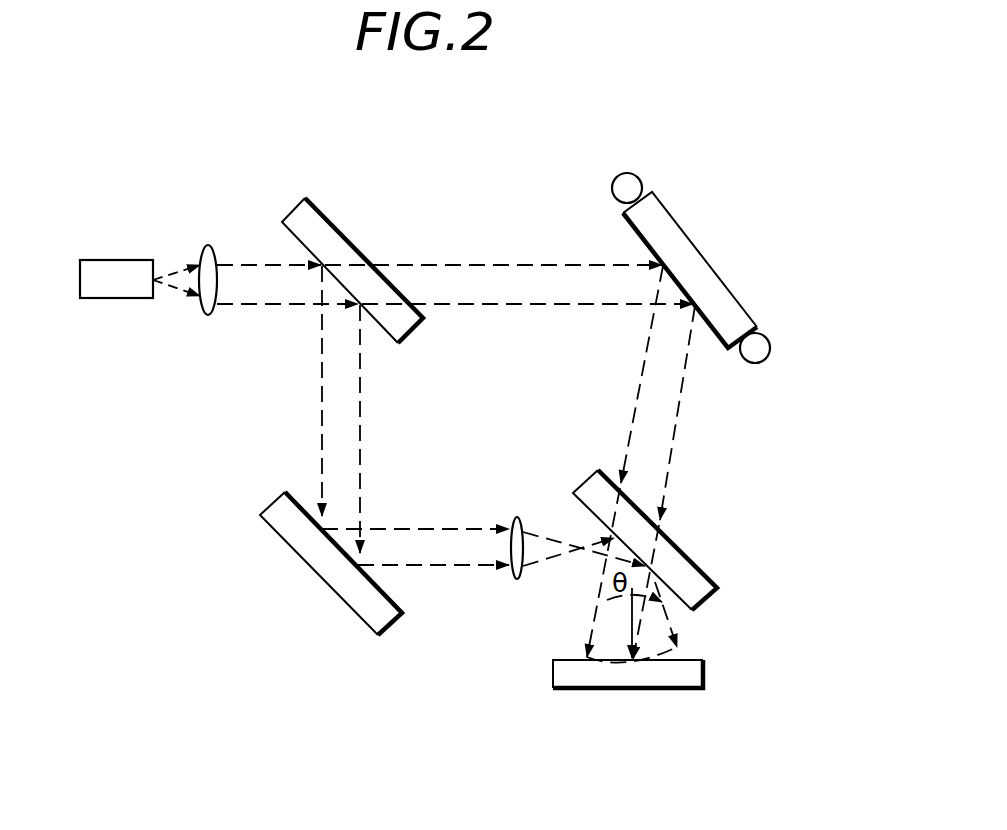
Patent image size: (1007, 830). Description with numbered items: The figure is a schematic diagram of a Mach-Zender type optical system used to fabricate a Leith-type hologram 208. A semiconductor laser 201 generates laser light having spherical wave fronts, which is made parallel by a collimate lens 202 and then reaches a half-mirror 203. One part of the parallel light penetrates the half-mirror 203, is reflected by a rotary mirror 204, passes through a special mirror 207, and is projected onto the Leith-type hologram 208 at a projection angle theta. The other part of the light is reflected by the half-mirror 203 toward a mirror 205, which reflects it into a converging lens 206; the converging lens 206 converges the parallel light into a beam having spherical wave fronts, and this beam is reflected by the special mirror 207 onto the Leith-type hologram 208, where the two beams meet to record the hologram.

The semiconductor laser 201 is at (127, 288).
The collimate lens 202 is at (202, 250).
The half-mirror 203 is at (328, 238).
The rotary mirror 204 is at (673, 235).
The mirror 205 is at (320, 563).
The converging lens 206 is at (512, 577).
The special mirror 207 is at (588, 482).
The Leith-type hologram 208 is at (592, 677).